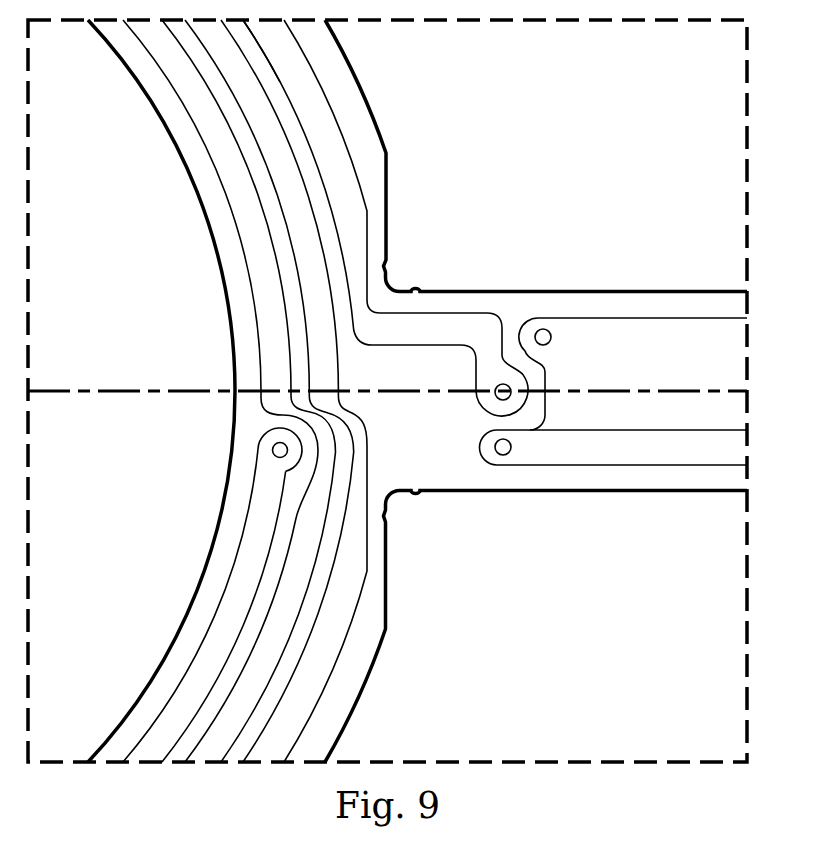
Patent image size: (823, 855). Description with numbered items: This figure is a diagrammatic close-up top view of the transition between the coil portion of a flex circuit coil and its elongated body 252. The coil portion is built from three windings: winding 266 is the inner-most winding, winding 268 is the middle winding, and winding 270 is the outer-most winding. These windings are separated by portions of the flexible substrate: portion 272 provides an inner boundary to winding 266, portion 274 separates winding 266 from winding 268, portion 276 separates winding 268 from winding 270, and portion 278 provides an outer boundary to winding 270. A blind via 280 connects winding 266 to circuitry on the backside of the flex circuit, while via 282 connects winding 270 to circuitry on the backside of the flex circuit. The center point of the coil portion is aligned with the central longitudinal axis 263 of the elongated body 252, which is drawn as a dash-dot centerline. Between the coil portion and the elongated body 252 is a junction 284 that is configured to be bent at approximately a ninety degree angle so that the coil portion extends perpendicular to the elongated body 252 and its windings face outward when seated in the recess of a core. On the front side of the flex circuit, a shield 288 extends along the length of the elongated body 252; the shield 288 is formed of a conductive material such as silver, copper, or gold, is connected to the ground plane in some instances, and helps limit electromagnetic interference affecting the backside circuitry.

The elongated body 252 is at (668, 265).
The central longitudinal axis 263 is at (648, 389).
The winding 266 is at (196, 653).
The winding 268 is at (283, 210).
The winding 270 is at (283, 82).
The portion 272 is at (210, 553).
The portion 274 is at (187, 723).
The portion 276 is at (283, 128).
The portion 278 is at (336, 106).
The blind via 280 is at (279, 451).
The via 282 is at (502, 398).
The junction 284 is at (402, 277).
The shield 288 is at (577, 317).